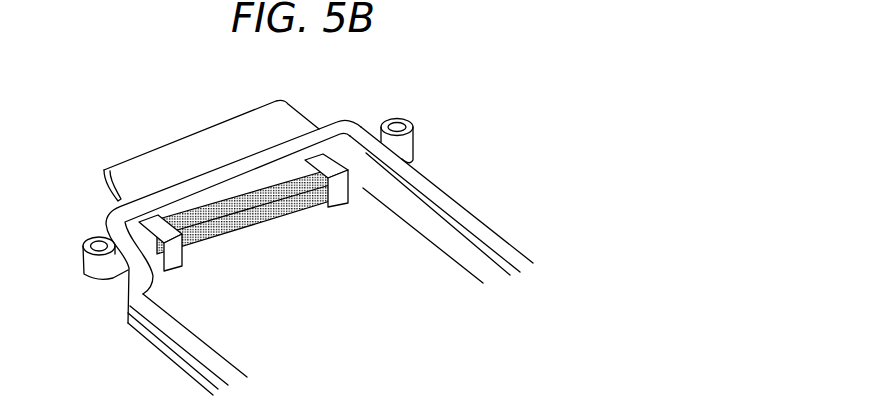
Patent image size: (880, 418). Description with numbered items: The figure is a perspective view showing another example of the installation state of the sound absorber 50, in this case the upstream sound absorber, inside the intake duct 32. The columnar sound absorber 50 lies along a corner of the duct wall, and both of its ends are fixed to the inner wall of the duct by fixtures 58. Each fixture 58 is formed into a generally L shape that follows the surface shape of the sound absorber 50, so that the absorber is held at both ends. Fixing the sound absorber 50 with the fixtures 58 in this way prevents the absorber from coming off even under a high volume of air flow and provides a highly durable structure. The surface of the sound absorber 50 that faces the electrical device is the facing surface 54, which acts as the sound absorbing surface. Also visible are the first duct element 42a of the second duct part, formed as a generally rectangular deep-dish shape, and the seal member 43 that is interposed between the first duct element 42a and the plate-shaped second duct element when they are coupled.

The intake duct 32 is at (146, 348).
The first duct element 42a is at (452, 246).
The seal member 43 is at (427, 185).
The sound absorber 50 is at (284, 172).
The facing surface 54 is at (272, 219).
The fixture 58 is at (135, 219).